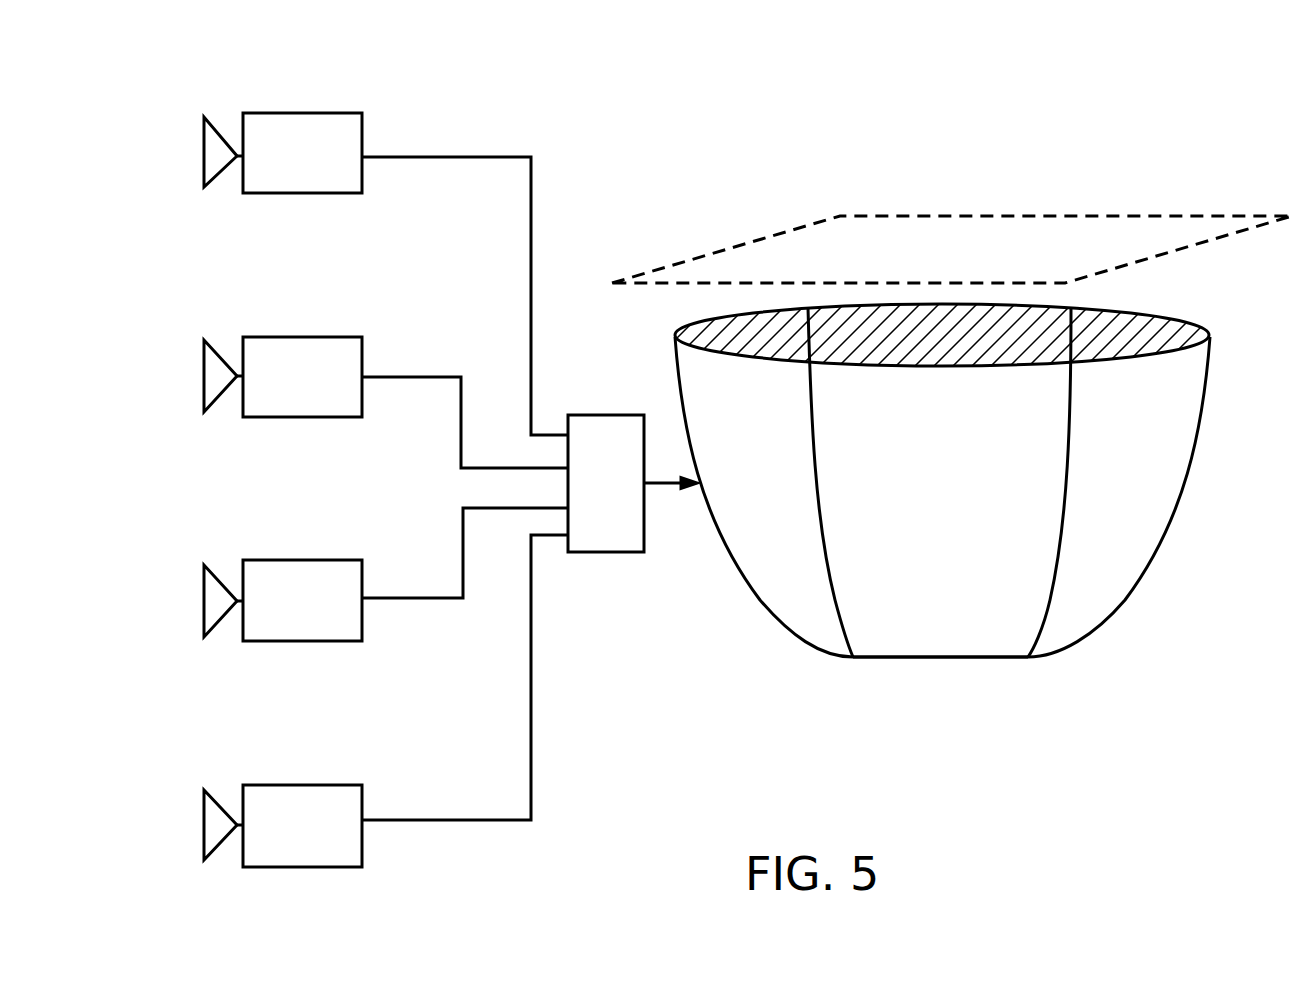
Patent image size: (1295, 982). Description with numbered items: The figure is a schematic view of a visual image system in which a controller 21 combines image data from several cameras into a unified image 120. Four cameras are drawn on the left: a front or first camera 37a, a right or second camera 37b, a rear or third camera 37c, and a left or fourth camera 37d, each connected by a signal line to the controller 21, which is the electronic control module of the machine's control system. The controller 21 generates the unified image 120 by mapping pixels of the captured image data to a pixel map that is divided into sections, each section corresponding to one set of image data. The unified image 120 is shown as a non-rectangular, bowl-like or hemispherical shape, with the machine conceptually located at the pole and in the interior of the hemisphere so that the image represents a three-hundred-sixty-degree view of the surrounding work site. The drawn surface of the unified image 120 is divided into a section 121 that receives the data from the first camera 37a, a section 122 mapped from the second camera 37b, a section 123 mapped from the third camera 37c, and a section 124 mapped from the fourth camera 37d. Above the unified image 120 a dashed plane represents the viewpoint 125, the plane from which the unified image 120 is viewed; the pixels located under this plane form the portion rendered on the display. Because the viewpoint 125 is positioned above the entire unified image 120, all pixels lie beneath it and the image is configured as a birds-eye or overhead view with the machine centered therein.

The front or first camera 37a is at (262, 113).
The right or second camera 37b is at (262, 337).
The rear or third camera 37c is at (262, 560).
The left or fourth camera 37d is at (262, 785).
The controller 21 is at (587, 489).
The unified image 120 is at (962, 658).
The section 121 is at (770, 592).
The section 122 is at (1012, 324).
The section 123 is at (1145, 549).
The section 124 is at (897, 640).
The viewpoint 125 is at (893, 216).